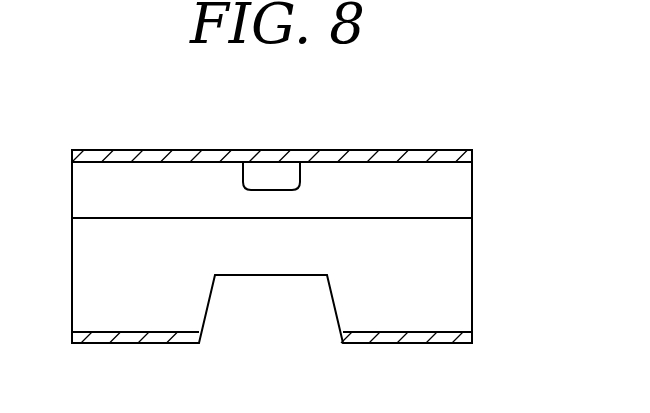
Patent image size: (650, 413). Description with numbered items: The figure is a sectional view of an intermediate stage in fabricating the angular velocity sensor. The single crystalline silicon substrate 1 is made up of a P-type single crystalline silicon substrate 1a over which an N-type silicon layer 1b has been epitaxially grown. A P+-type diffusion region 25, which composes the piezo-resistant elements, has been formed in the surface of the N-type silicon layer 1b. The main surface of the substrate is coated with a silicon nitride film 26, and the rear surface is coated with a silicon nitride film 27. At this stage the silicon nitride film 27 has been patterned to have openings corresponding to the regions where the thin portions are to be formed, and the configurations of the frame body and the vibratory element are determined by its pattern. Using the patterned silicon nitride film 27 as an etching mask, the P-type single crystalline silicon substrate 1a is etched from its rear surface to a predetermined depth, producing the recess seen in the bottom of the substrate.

The single crystalline silicon substrate 1 is at (325, 246).
The P-type single crystalline silicon substrate 1a is at (480, 289).
The N-type silicon layer 1b is at (467, 189).
The P+-type diffusion region 25 is at (292, 167).
The silicon nitride film 26 is at (433, 152).
The silicon nitride film 27 is at (445, 338).